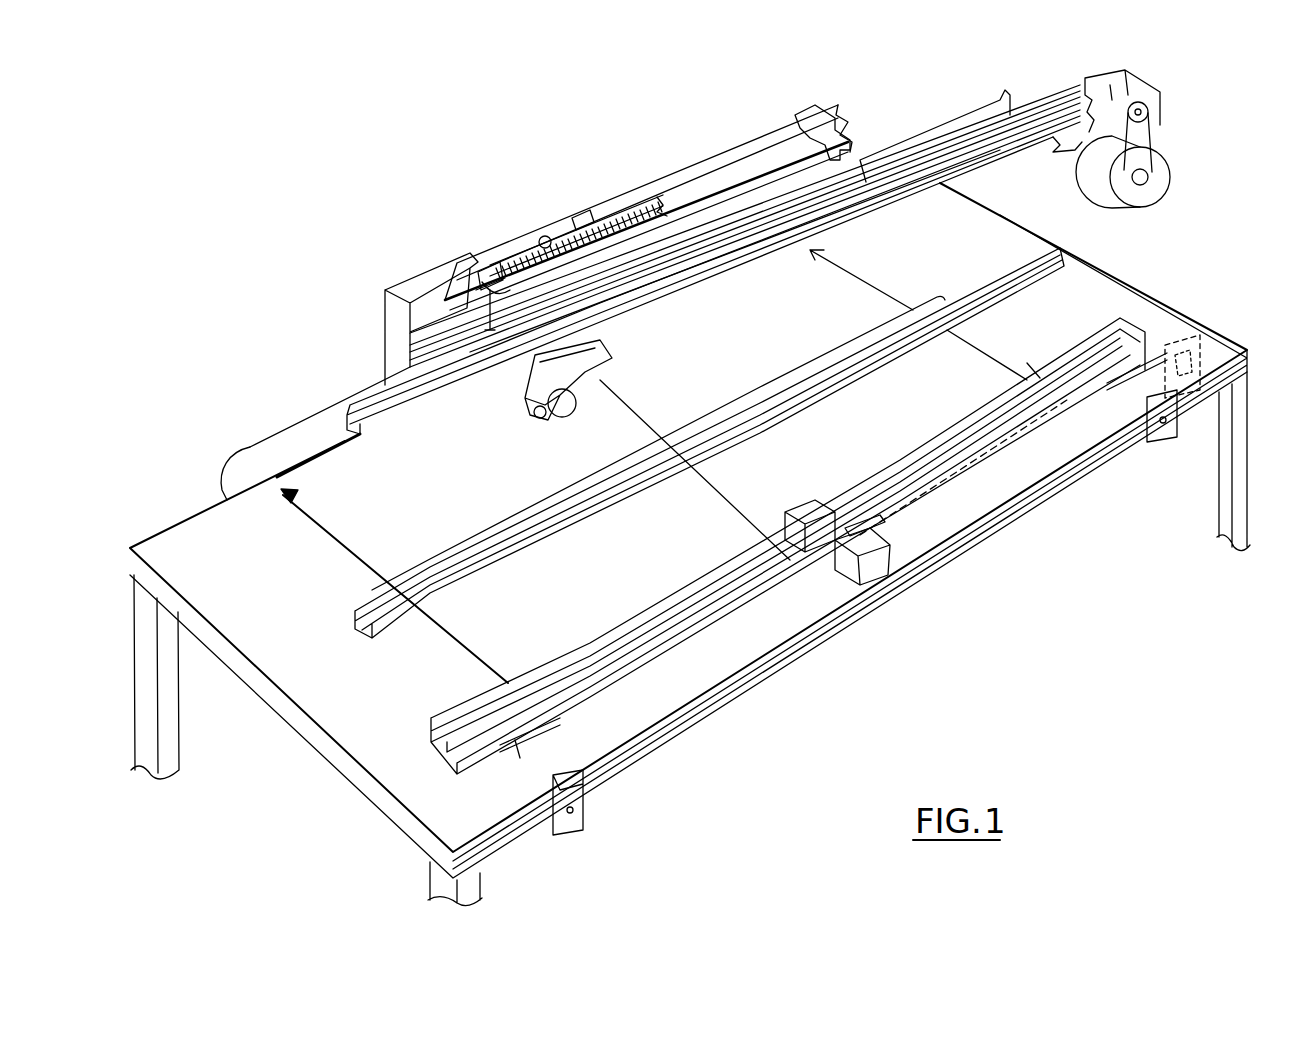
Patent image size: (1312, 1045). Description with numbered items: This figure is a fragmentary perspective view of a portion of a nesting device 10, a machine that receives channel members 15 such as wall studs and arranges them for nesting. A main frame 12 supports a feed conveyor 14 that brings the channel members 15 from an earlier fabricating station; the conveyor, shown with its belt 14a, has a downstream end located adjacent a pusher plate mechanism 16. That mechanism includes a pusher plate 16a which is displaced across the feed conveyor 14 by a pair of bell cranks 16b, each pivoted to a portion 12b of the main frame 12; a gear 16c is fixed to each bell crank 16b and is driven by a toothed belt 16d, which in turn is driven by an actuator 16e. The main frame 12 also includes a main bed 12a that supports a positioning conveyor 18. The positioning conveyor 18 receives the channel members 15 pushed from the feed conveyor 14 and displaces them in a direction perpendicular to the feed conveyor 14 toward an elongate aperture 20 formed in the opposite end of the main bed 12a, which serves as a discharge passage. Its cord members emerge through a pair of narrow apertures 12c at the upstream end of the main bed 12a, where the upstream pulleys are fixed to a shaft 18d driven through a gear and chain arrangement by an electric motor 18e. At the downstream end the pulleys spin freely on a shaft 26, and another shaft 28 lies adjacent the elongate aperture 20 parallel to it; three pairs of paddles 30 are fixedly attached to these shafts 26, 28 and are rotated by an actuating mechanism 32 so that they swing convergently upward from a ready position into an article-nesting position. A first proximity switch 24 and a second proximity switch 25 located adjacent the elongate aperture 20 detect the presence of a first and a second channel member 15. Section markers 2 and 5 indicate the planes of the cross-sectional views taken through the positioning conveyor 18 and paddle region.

The nesting device 10 is at (266, 408).
The main frame 12 is at (690, 544).
The main bed 12a is at (368, 699).
The portion of the main frame 12b is at (445, 268).
The narrow apertures 12c is at (292, 494).
The feed conveyor 14 is at (695, 280).
The conveyor belt 14a is at (318, 400).
The channel members 15 is at (358, 607).
The pusher plate mechanism 16 is at (710, 202).
The pusher plate 16a is at (960, 122).
The bell cranks 16b is at (798, 118).
The gear 16c is at (492, 262).
The toothed belt 16d is at (618, 222).
The actuator 16e is at (582, 222).
The positioning conveyor 18 is at (710, 378).
The shaft 18d is at (598, 385).
The electric motor 18e is at (562, 410).
The elongate aperture 20 is at (417, 769).
The first proximity switch 24 is at (505, 758).
The second proximity switch 25 is at (828, 500).
The shaft 26 is at (785, 522).
The shaft 28 is at (830, 578).
The paddles 30 is at (882, 532).
The actuating mechanism 32 is at (1200, 380).
The section line 2 is at (1118, 306).
The section line 5 is at (935, 608).